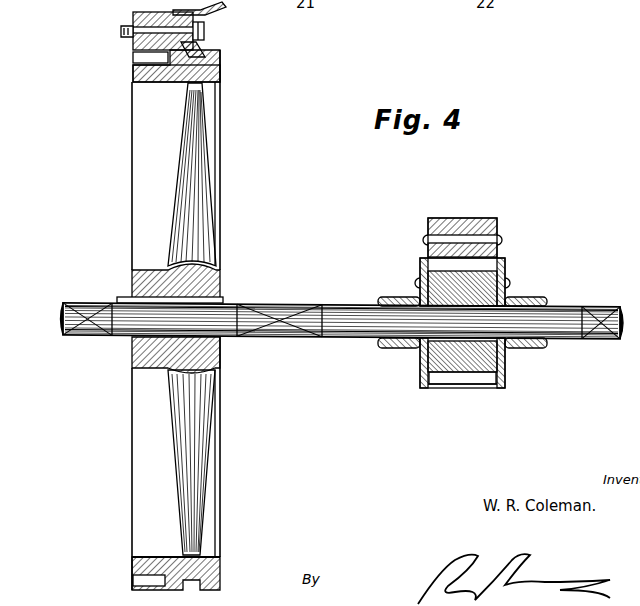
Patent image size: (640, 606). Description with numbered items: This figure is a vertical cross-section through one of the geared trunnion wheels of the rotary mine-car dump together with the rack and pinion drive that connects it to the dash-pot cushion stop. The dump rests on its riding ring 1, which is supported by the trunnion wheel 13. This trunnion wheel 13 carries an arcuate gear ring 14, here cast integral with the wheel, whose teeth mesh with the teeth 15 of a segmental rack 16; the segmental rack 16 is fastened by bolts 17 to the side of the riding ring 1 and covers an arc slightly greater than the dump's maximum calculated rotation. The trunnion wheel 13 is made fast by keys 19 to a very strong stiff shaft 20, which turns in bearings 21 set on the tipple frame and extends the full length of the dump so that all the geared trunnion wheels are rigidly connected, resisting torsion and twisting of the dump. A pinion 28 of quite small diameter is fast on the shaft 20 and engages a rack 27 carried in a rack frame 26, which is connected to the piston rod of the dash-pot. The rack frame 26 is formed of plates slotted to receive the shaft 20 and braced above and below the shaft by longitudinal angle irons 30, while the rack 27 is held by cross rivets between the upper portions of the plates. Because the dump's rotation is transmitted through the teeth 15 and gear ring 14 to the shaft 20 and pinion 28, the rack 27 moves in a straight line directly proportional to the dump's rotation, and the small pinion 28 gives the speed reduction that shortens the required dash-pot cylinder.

The riding ring 1 is at (203, 50).
The trunnion wheel 13 is at (221, 73).
The arcuate gear ring 14 is at (133, 80).
The teeth 15 is at (133, 59).
The segmental rack 16 is at (133, 20).
The bolts 17 is at (121, 33).
The keys 19 is at (119, 297).
The shaft 20 is at (272, 305).
The bearings 21 is at (220, 288).
The rack frame 26 is at (498, 223).
The rack 27 is at (505, 251).
The pinion 28 is at (472, 384).
The longitudinal angle irons 30 is at (408, 297).